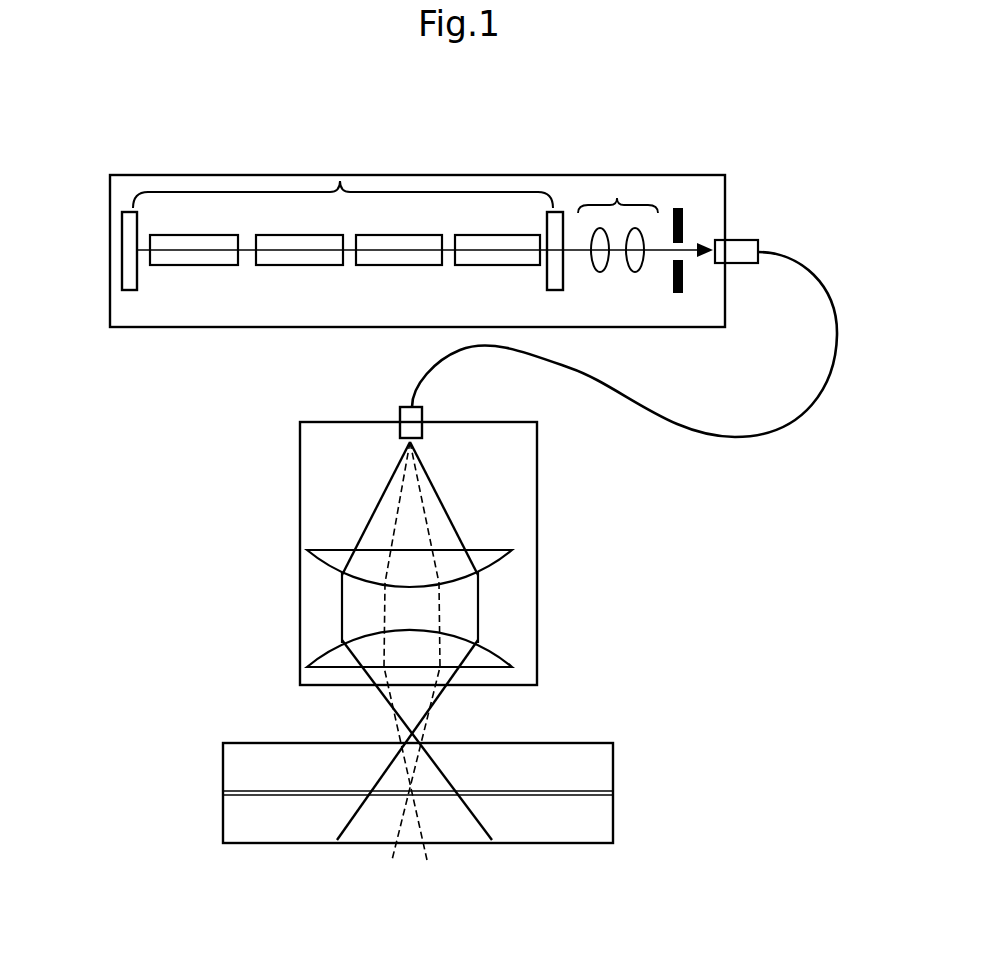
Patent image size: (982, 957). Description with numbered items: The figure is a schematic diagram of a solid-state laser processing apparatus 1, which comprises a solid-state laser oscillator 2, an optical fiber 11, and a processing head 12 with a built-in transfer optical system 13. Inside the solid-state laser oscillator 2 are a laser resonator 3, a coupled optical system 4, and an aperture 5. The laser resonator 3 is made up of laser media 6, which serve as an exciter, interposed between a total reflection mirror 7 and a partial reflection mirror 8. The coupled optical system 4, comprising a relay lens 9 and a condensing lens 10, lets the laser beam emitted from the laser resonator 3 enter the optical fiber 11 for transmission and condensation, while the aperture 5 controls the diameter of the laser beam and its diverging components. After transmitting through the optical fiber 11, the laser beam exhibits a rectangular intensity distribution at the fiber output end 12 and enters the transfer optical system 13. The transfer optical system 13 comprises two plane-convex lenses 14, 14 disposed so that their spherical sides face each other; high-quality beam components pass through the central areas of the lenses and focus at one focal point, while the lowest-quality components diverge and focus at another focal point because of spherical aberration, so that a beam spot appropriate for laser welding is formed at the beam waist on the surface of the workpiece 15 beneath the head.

The solid-state laser processing apparatus 1 is at (141, 557).
The solid-state laser oscillator 2 is at (403, 177).
The laser resonator 3 is at (345, 180).
The coupled optical system 4 is at (620, 238).
The aperture 5 is at (683, 205).
The laser media 6 is at (490, 261).
The total reflection mirror 7 is at (128, 277).
The partial reflection mirror 8 is at (548, 283).
The relay lens 9 is at (600, 271).
The condensing lens 10 is at (635, 273).
The optical fiber 11 is at (811, 400).
The processing head 12 is at (421, 415).
The transfer optical system 13 is at (527, 502).
The plane-convex lenses 14 is at (495, 655).
The workpiece 15 is at (577, 760).